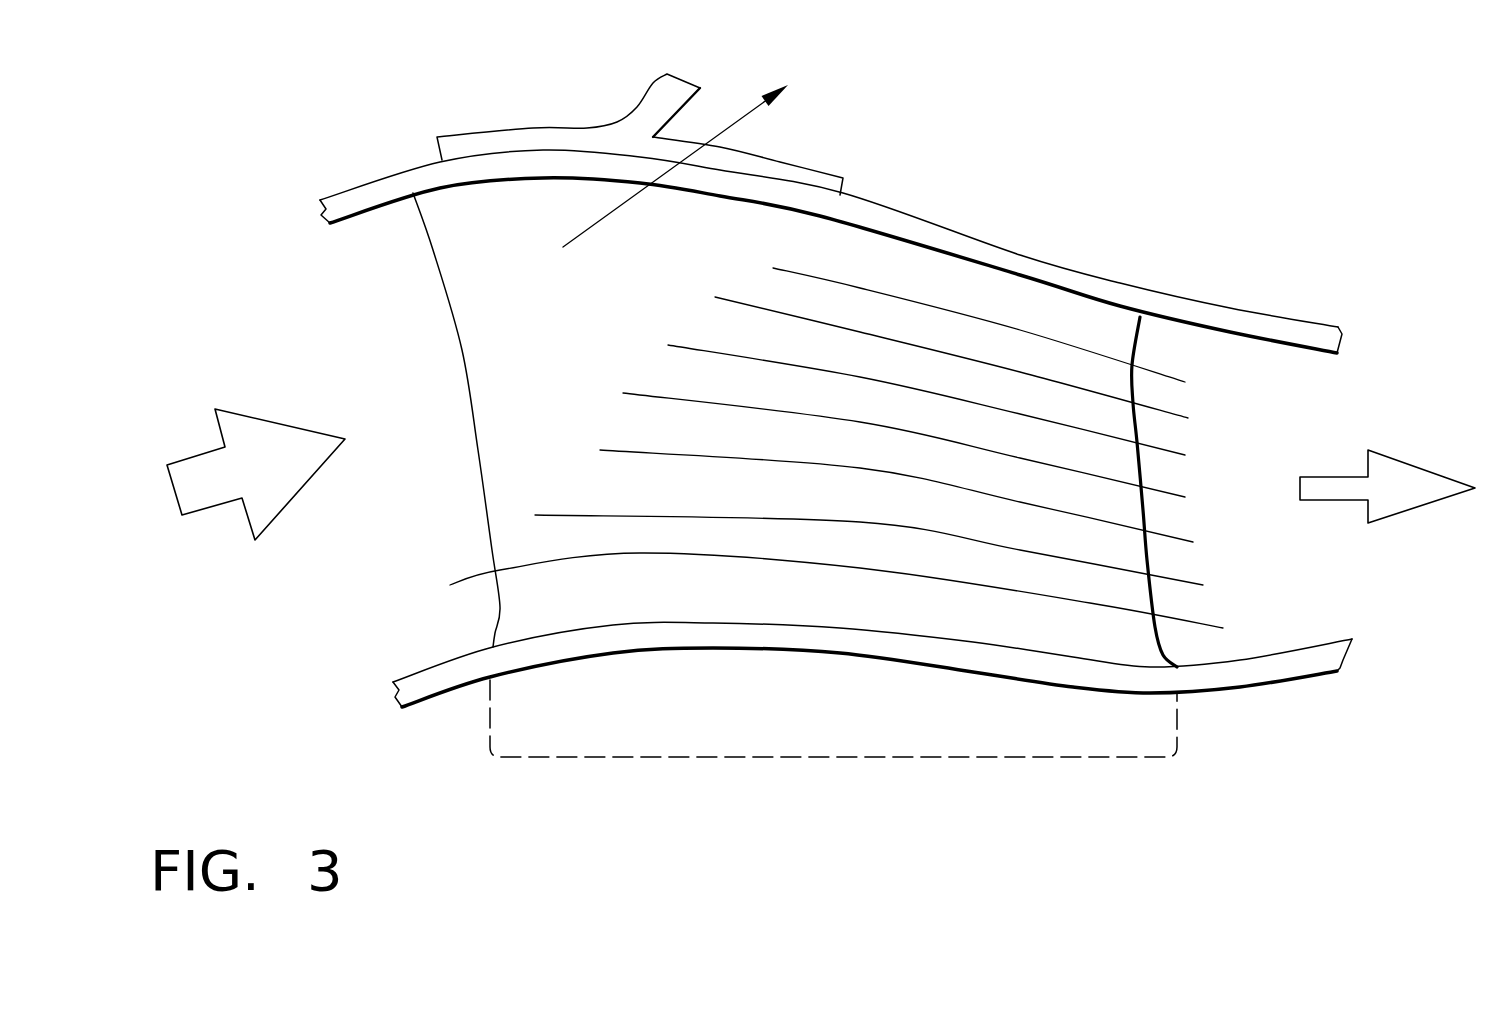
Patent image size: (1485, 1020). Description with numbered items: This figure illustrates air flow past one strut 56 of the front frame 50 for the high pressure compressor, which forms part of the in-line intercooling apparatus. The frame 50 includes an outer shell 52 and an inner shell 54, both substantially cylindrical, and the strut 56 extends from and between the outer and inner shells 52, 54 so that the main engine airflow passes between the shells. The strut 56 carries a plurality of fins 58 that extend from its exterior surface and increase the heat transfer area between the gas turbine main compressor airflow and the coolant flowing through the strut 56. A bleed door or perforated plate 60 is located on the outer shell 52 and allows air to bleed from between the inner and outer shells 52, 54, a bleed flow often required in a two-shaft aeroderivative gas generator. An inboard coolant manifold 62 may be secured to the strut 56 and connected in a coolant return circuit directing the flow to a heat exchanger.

The front frame 50 is at (948, 146).
The outer shell 52 is at (1020, 255).
The inner shell 54 is at (825, 648).
The strut 56 is at (1145, 513).
The fins 58 is at (1088, 603).
The bleed door or perforated plate 60 is at (645, 120).
The inboard coolant manifold 62 is at (1077, 757).